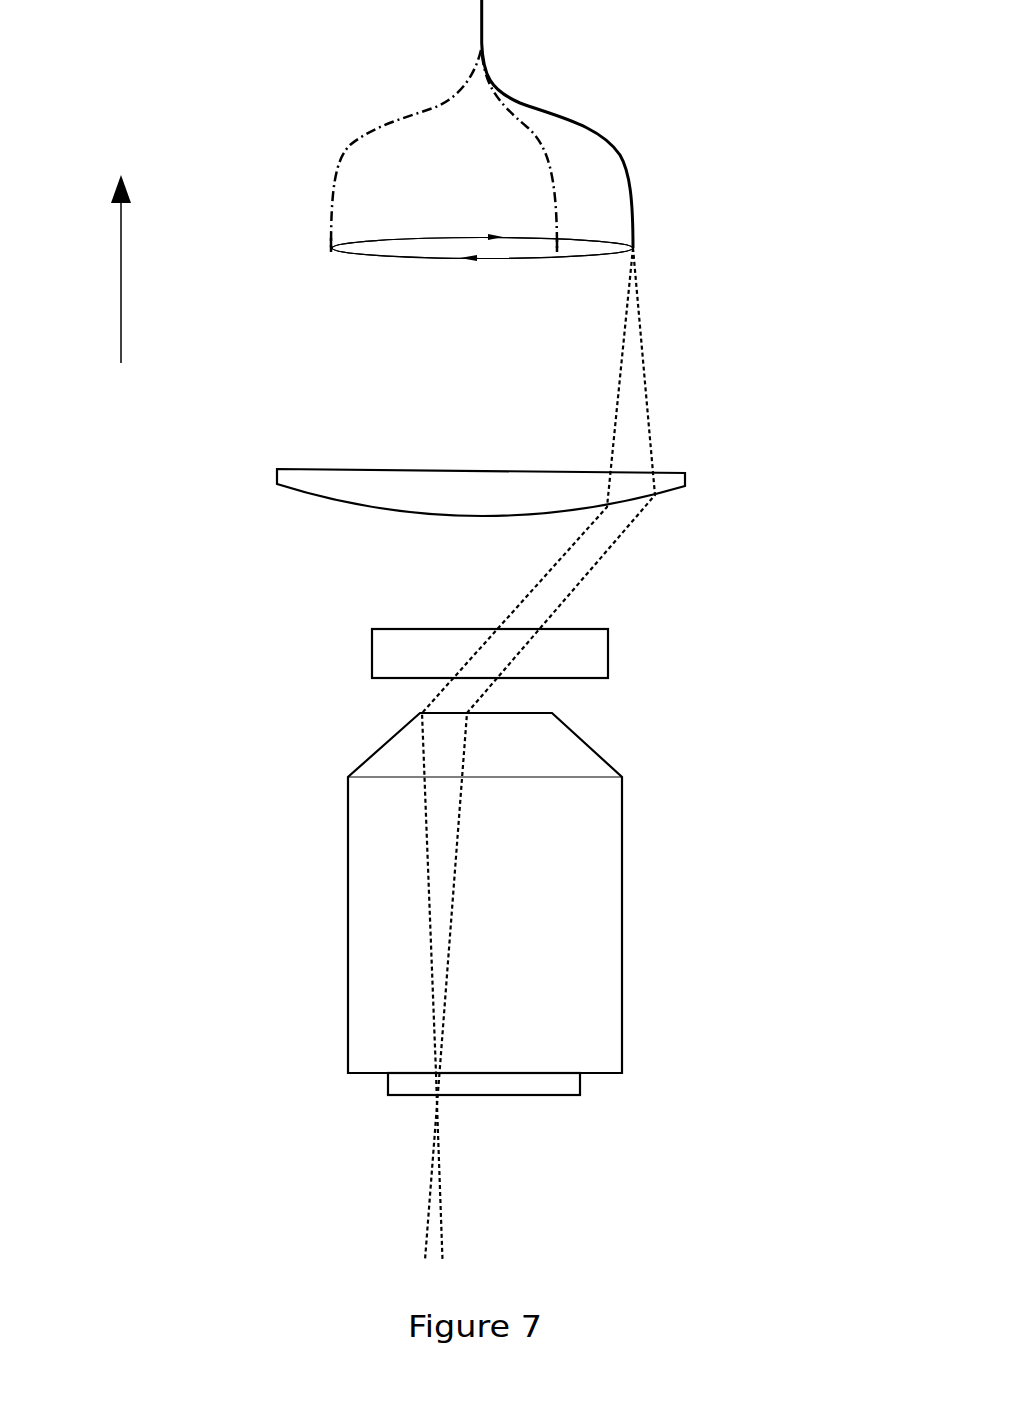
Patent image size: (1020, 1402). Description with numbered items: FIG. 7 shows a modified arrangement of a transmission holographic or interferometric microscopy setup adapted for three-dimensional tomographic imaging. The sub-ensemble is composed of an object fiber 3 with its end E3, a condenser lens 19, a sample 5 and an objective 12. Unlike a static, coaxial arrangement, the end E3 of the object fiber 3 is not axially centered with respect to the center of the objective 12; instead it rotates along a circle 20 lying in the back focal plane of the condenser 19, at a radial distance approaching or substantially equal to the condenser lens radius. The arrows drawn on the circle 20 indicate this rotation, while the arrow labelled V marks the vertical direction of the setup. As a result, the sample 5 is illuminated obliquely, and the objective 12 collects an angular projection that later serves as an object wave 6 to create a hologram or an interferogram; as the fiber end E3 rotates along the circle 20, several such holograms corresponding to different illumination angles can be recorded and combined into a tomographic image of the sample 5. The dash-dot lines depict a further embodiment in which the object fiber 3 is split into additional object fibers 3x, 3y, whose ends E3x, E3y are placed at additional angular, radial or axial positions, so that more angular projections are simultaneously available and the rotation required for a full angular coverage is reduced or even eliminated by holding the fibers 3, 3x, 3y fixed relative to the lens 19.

The object fiber 3 is at (617, 152).
The additional object fiber 3x is at (547, 160).
The additional object fiber 3y is at (390, 120).
The end of the object fiber E3 is at (633, 248).
The end of additional object fiber E3x is at (557, 250).
The end of additional object fiber E3y is at (332, 249).
The circle 20 is at (370, 257).
The condenser lens 19 is at (662, 497).
The sample 5 is at (384, 647).
The objective 12 is at (607, 913).
The object wave 6 is at (437, 1113).
The direction of movement V is at (122, 251).